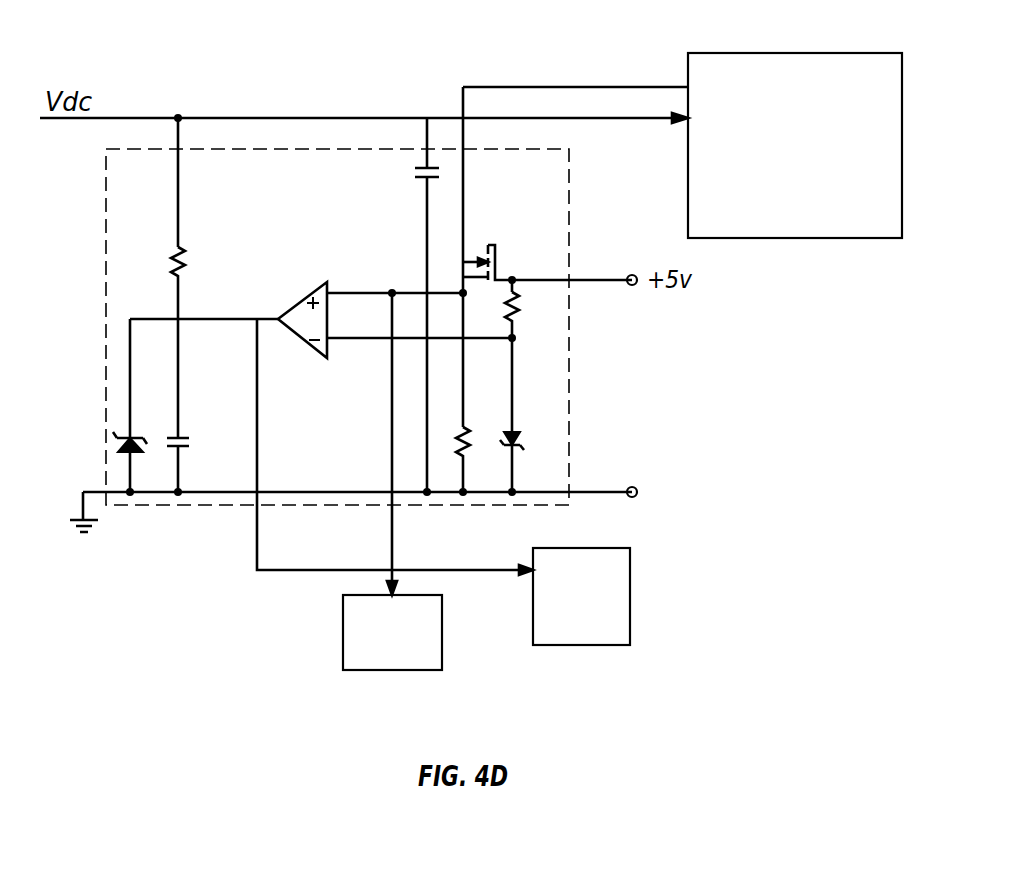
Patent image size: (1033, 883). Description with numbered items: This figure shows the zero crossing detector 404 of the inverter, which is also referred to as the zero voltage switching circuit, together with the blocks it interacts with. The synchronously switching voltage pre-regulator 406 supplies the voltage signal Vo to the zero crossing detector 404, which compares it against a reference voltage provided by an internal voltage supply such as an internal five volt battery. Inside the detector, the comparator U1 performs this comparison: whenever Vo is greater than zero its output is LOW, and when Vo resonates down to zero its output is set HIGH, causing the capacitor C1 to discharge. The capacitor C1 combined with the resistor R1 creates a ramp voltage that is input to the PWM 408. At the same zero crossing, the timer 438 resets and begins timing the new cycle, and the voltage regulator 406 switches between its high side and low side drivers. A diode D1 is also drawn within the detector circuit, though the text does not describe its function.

The zero crossing detector 404 is at (106, 282).
The switching voltage pre-regulator 406 is at (772, 52).
The PWM 408 is at (555, 547).
The timer 438 is at (443, 628).
The resistor R1 is at (196, 263).
The capacitor C1 is at (195, 426).
The comparator U1 is at (296, 318).
The zener diode D1 is at (527, 438).